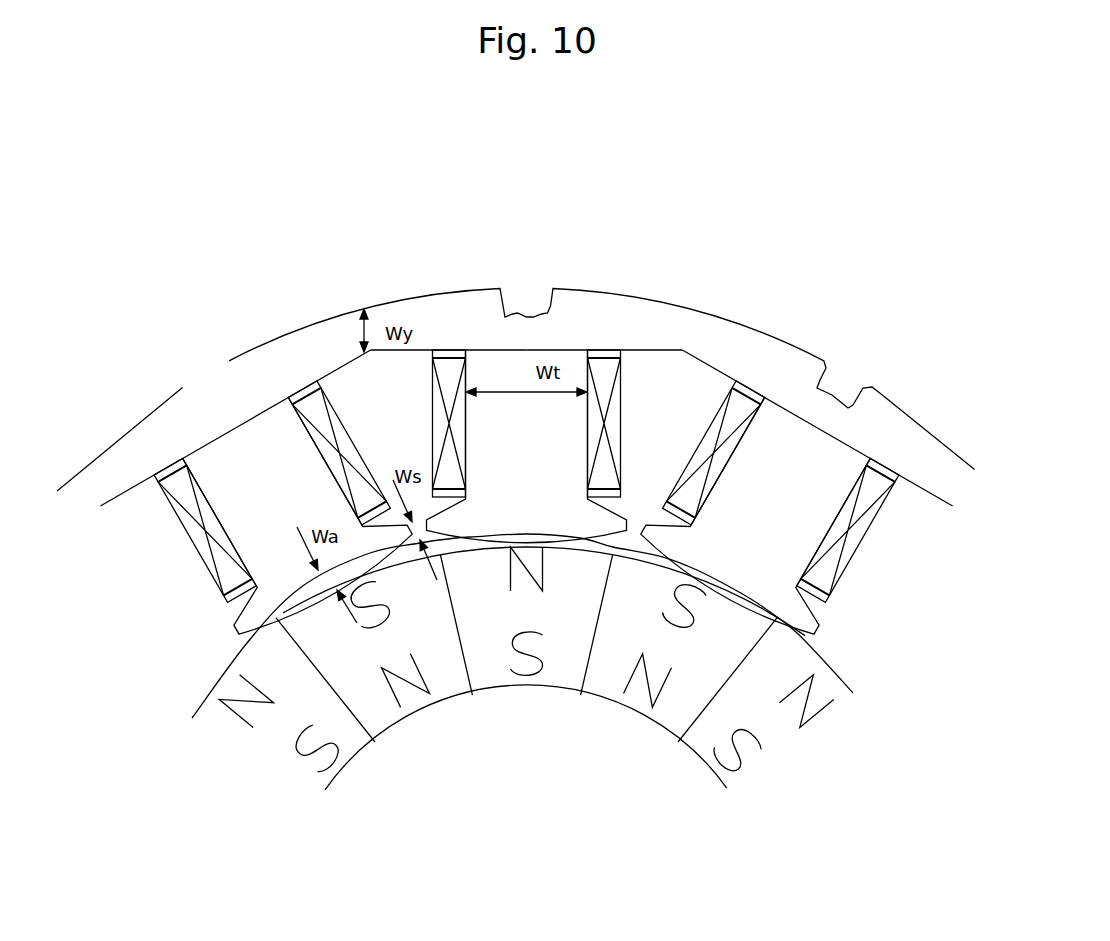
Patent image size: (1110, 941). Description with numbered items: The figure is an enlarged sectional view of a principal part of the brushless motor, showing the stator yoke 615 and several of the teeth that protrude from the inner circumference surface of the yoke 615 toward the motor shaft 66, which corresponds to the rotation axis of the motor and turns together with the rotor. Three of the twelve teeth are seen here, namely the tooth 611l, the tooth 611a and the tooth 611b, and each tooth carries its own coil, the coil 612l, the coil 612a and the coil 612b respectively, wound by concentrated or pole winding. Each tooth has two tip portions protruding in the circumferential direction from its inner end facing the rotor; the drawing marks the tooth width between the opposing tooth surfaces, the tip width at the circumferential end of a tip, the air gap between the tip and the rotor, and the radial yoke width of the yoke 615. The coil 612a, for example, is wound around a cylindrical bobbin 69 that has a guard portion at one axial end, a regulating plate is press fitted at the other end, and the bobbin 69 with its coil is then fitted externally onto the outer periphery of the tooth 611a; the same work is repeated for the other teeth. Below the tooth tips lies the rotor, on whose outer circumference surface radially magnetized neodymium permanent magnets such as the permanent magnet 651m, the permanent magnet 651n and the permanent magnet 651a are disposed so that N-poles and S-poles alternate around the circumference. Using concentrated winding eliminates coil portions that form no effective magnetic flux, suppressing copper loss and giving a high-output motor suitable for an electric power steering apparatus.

The yoke 615 is at (317, 323).
The tooth 611l is at (229, 358).
The tooth 611a is at (520, 380).
The tooth 611b is at (803, 445).
The coil 612l is at (157, 473).
The coil 612a is at (652, 527).
The coil 612b is at (733, 385).
The permanent magnet 651m is at (320, 617).
The permanent magnet 651n is at (478, 557).
The permanent magnet 651a is at (655, 520).
The bobbin 69 is at (815, 592).
The motor shaft 66 is at (526, 737).